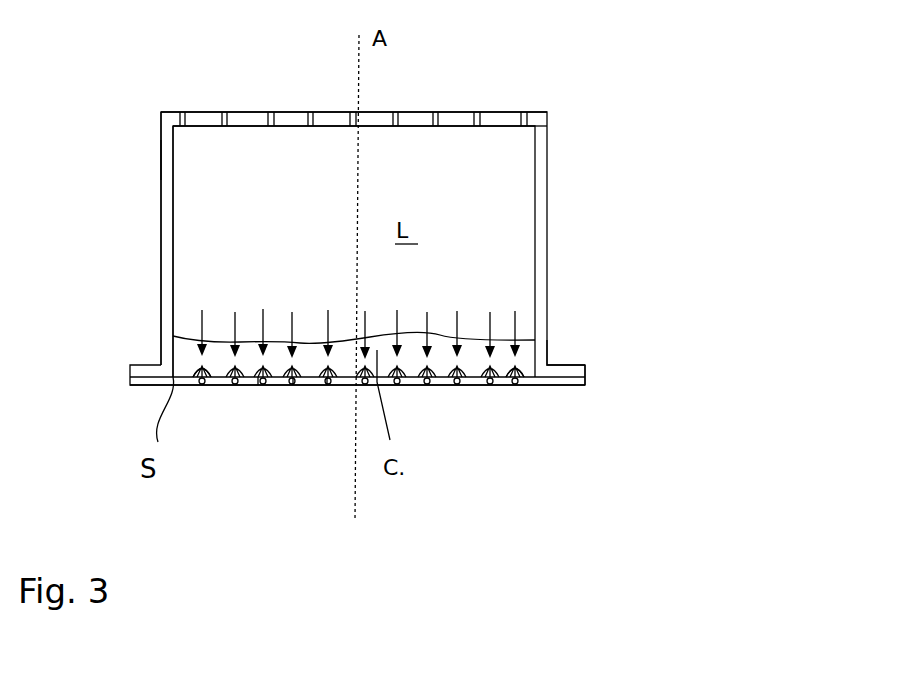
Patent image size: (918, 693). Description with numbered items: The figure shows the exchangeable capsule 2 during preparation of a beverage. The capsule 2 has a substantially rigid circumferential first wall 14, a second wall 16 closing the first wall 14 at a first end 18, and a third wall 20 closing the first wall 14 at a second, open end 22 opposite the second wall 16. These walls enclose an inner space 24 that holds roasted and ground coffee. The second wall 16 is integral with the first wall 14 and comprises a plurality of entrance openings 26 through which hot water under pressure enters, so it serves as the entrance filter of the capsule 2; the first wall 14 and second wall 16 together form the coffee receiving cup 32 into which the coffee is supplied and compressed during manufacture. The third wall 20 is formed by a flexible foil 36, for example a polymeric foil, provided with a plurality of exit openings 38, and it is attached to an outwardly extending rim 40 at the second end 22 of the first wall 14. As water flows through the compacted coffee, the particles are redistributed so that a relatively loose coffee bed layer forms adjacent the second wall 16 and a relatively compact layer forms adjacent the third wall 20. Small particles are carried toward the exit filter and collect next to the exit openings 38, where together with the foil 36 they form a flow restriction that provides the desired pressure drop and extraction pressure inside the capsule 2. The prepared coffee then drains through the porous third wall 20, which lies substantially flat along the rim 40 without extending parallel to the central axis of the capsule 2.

The exchangeable capsule 2 is at (697, 460).
The circumferential first wall 14 is at (538, 235).
The second wall 16 is at (502, 112).
The first end 18 is at (537, 138).
The third wall 20 is at (495, 385).
The second end 22 is at (540, 357).
The inner space 24 is at (175, 233).
The entrance openings 26 is at (273, 105).
The coffee receiving cup 32 is at (158, 160).
The flexible foil 36 is at (388, 418).
The exit openings 38 is at (258, 382).
The outwardly extending rim 40 is at (580, 371).